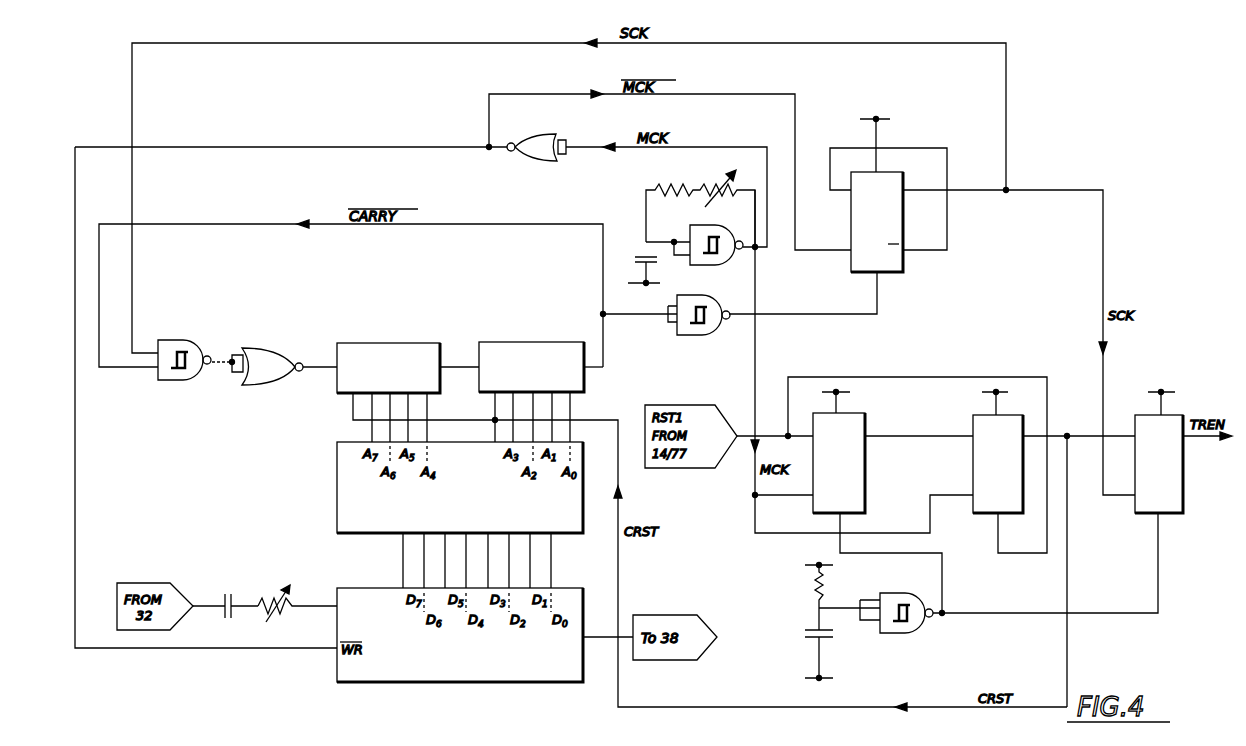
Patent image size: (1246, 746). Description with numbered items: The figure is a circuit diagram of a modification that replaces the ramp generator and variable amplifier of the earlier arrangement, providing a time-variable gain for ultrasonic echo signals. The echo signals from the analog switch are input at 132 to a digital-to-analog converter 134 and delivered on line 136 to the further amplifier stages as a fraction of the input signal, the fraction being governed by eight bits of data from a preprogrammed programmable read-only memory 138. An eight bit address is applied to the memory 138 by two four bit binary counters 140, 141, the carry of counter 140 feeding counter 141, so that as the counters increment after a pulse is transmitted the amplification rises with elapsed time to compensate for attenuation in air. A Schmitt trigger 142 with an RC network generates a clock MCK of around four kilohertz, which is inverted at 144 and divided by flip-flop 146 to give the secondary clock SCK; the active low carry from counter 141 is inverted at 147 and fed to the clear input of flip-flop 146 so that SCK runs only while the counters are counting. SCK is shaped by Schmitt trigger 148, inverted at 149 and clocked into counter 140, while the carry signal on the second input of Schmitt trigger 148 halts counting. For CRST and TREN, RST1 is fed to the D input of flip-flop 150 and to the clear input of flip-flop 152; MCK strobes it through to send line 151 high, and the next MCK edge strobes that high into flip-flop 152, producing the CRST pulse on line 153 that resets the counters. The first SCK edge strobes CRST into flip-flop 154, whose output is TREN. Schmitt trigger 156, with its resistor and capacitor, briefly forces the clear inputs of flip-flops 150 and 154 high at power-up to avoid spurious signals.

The input 132 is at (324, 606).
The digital-to-analog converter 134 is at (525, 658).
The output line 136 is at (594, 637).
The programmable read-only memory 138 is at (337, 492).
The four bit binary counter 140 is at (422, 336).
The four bit binary counter 141 is at (535, 354).
The Schmitt trigger 142 is at (716, 266).
The inverter 144 is at (540, 160).
The flip-flop 146 is at (910, 262).
The inverter 147 is at (700, 335).
The Schmitt trigger 148 is at (186, 378).
The inverter 149 is at (263, 358).
The flip-flop 150 is at (865, 491).
The line 151 is at (906, 436).
The flip-flop 152 is at (975, 465).
The line 153 is at (1066, 436).
The flip-flop 154 is at (1138, 513).
The Schmitt trigger 156 is at (906, 634).